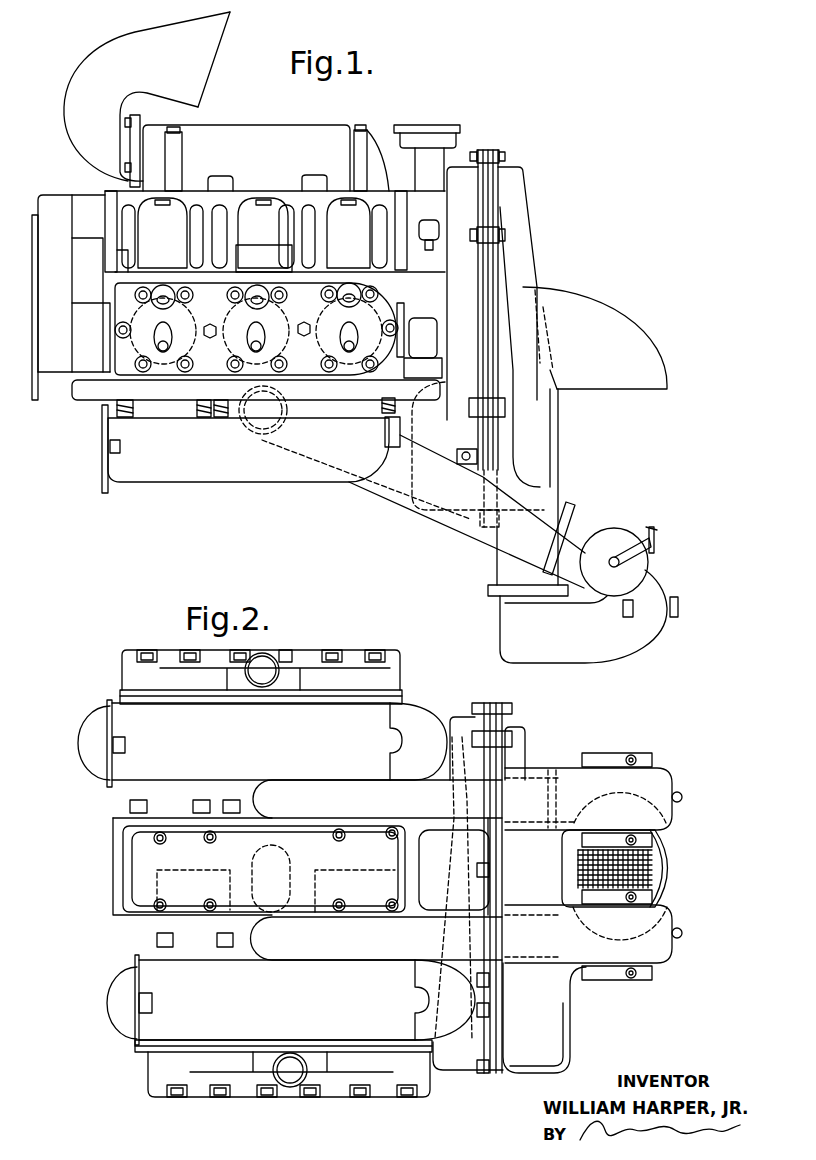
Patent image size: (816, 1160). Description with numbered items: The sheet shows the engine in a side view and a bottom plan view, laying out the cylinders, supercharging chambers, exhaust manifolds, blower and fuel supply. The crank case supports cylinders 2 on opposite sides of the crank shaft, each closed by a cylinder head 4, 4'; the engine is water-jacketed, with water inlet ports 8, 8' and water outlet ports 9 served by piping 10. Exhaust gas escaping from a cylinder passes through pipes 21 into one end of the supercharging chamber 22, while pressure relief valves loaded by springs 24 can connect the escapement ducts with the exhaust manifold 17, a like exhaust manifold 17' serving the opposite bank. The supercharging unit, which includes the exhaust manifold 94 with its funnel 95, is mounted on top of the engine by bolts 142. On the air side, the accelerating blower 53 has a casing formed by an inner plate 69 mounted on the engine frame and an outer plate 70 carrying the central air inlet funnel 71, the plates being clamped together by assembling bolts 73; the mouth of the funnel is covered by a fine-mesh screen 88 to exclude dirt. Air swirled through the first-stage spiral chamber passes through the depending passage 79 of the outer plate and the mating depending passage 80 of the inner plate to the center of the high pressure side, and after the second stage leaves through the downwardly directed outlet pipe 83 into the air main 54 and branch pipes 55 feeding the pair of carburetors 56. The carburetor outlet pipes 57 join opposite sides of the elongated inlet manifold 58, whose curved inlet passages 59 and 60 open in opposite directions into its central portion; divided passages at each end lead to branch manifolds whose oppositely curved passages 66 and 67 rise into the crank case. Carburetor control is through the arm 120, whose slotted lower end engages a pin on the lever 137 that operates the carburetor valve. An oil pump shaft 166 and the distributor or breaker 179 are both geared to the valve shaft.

In FIG. 1, the cylinder 2 is at (365, 317).
In FIG. 1, the cylinder head 4 is at (256, 406).
In FIG. 2, the cylinder head 4 is at (238, 676).
In FIG. 2, the cylinder head 4' is at (283, 1089).
In FIG. 1, the water inlet port 8 is at (249, 423).
In FIG. 2, the water inlet port 8 is at (263, 656).
In FIG. 2, the water inlet port 8' is at (294, 1095).
In FIG. 1, the water outlet port 9 is at (248, 253).
In FIG. 1, the piping 10 is at (90, 327).
In FIG. 1, the exhaust manifold 17 is at (251, 463).
In FIG. 2, the exhaust manifold 17 is at (262, 721).
In FIG. 2, the crankcase 17' is at (287, 1018).
In FIG. 1, the pipe 21 is at (325, 197).
In FIG. 1, the supercharging chamber 22 is at (382, 184).
In FIG. 1, the spring 24 is at (137, 417).
In FIG. 1, the accelerating blower 53 is at (505, 147).
In FIG. 2, the accelerating blower 53 is at (502, 760).
In FIG. 1, the air main 54 is at (507, 602).
In FIG. 2, the air main 54 is at (553, 1038).
In FIG. 1, the branch pipe 55 is at (637, 640).
In FIG. 2, the branch pipe 55 is at (656, 780).
In FIG. 1, the carburetor 56 is at (638, 575).
In FIG. 2, the carburetor 56 is at (609, 753).
In FIG. 1, the outlet pipe 57 is at (382, 485).
In FIG. 2, the outlet pipe 57 is at (334, 790).
In FIG. 2, the inlet manifold 58 is at (315, 848).
In FIG. 2, the curved inlet passage 59 is at (287, 850).
In FIG. 2, the curved inlet passage 60 is at (262, 906).
In FIG. 2, the curved passage 66 is at (180, 850).
In FIG. 2, the curved passage 67 is at (190, 888).
In FIG. 1, the inner plate 69 is at (462, 180).
In FIG. 2, the inner plate 69 is at (465, 723).
In FIG. 1, the outer plate 70 is at (513, 195).
In FIG. 2, the outer plate 70 is at (529, 767).
In FIG. 1, the air inlet funnel 71 is at (614, 317).
In FIG. 2, the air inlet funnel 71 is at (672, 837).
In FIG. 1, the assembling bolt 73 is at (502, 233).
In FIG. 1, the depending passage 79 is at (535, 470).
In FIG. 1, the depending passage 80 is at (437, 497).
In FIG. 1, the outlet pipe 83 is at (548, 493).
In FIG. 2, the outlet pipe 83 is at (465, 1058).
In FIG. 2, the fine-mesh screen 88 is at (652, 868).
In FIG. 1, the exhaust manifold 94 is at (215, 133).
In FIG. 1, the funnel 95 is at (200, 70).
In FIG. 1, the arm 120 is at (655, 540).
In FIG. 1, the lever 137 is at (630, 552).
In FIG. 1, the bolt 142 is at (125, 262).
In FIG. 1, the shaft 166 is at (429, 230).
In FIG. 1, the distributor or breaker 179 is at (442, 128).